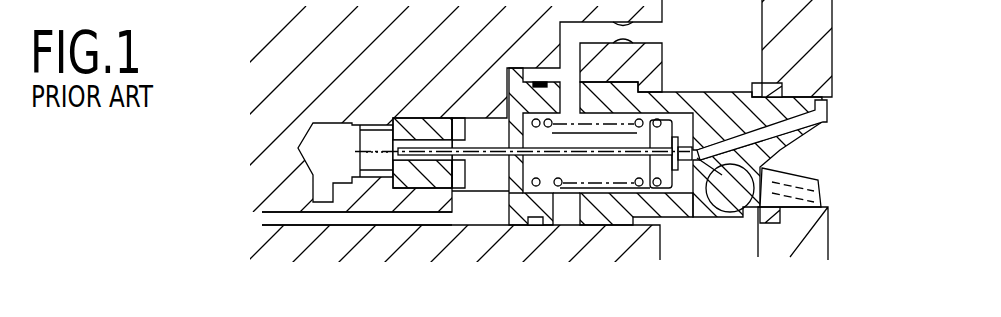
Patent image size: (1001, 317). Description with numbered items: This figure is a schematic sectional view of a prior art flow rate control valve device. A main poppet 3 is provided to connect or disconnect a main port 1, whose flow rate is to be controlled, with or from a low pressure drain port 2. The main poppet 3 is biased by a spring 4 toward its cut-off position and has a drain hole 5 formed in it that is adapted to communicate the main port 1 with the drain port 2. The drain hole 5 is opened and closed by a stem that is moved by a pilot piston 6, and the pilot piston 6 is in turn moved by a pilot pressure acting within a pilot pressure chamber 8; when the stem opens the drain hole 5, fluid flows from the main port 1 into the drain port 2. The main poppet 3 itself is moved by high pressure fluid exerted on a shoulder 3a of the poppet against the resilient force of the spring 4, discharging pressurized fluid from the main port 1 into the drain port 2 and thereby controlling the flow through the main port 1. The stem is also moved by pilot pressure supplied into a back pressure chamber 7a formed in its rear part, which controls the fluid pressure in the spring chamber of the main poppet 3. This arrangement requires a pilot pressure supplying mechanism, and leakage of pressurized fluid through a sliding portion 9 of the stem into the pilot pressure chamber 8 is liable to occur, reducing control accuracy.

The main port 1 is at (762, 22).
The drain port 2 is at (833, 102).
The main poppet 3 is at (680, 207).
The shoulder 3a is at (753, 95).
The spring 4 is at (652, 186).
The drain hole 5 is at (763, 207).
The pilot piston 6 is at (413, 118).
The back pressure chamber 7a is at (310, 138).
The pilot pressure chamber 8 is at (477, 178).
The sliding portion 9 is at (498, 145).